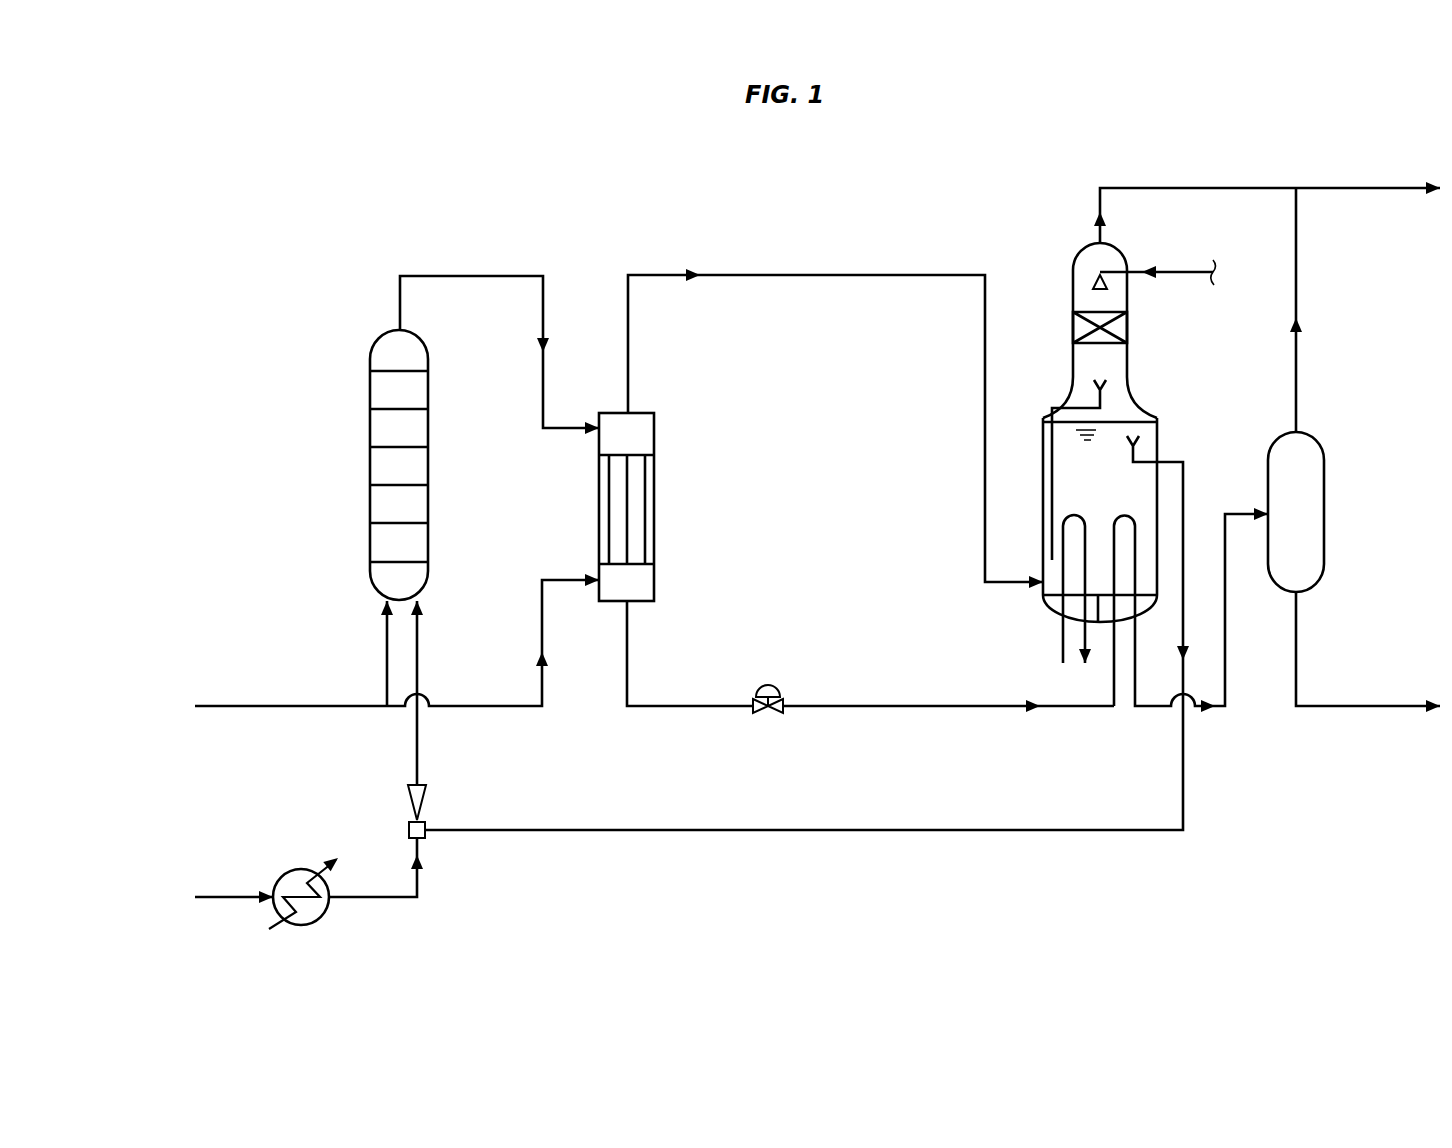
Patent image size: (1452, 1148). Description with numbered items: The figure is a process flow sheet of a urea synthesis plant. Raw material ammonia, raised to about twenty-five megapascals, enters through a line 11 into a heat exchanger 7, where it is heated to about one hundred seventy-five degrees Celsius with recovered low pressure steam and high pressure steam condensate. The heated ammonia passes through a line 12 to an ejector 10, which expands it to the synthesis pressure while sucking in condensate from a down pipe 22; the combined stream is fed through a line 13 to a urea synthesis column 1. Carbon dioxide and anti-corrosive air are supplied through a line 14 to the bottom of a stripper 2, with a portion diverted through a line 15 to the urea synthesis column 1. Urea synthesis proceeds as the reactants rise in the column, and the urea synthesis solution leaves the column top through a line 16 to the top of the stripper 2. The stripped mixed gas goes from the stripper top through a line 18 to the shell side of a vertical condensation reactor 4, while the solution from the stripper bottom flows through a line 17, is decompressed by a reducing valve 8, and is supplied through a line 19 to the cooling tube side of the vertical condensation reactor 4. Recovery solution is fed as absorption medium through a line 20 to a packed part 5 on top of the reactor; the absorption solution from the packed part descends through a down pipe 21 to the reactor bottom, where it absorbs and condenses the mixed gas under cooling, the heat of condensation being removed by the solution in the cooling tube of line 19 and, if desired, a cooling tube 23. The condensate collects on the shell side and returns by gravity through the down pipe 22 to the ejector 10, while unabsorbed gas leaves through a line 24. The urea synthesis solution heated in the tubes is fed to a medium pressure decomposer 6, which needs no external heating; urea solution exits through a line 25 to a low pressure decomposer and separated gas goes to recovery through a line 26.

The urea synthesis column 1 is at (430, 356).
The stripper 2 is at (657, 420).
The vertical condensation reactor 4 is at (1158, 410).
The packed part 5 is at (1130, 324).
The medium pressure decomposer 6 is at (1326, 483).
The heat exchanger 7 is at (307, 925).
The reducing valve 8 is at (768, 715).
The ejector 10 is at (428, 801).
The line 11 is at (230, 902).
The line 12 is at (385, 902).
The line 13 is at (421, 628).
The line 14 is at (286, 708).
The line 15 is at (384, 649).
The line 16 is at (520, 284).
The line 17 is at (630, 652).
The line 18 is at (631, 326).
The line (cooling tube) 19 is at (912, 710).
The line 20 is at (1186, 275).
The down pipe 21 is at (1055, 480).
The down pipe 22 is at (1186, 482).
The cooling tube 23 is at (1062, 636).
The line 24 is at (1172, 190).
The line 25 is at (1299, 654).
The line 26 is at (1299, 284).